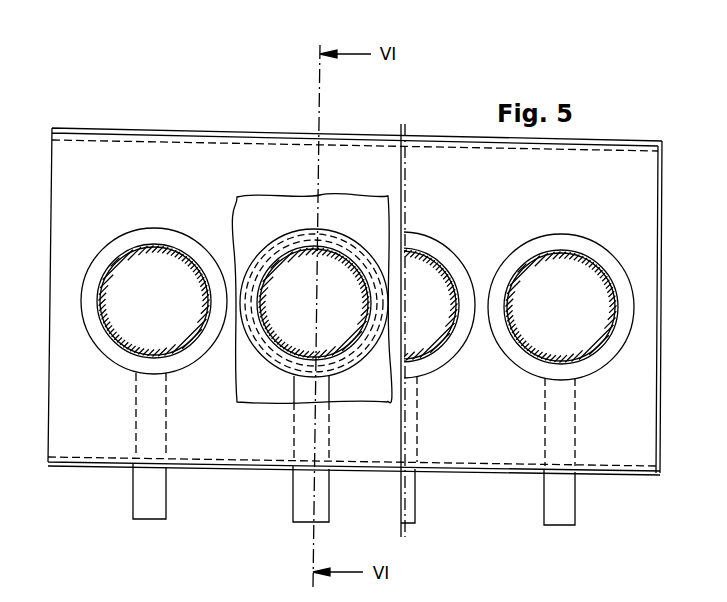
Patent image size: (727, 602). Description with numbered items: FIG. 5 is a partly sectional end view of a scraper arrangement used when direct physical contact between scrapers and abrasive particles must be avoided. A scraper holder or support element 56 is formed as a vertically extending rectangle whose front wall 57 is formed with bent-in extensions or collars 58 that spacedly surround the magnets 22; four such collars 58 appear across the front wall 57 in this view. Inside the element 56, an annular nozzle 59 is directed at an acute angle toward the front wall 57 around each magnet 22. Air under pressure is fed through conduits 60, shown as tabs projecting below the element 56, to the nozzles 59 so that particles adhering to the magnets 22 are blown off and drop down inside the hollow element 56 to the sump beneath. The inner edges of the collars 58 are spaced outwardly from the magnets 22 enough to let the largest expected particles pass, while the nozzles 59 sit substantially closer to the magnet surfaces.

The magnet 22 is at (322, 252).
The scraper holder or support element 56 is at (49, 420).
The front wall 57 is at (75, 152).
The bent-in extensions or collars 58 is at (156, 232).
The annular nozzle 59 is at (285, 355).
The conduit 60 is at (322, 499).